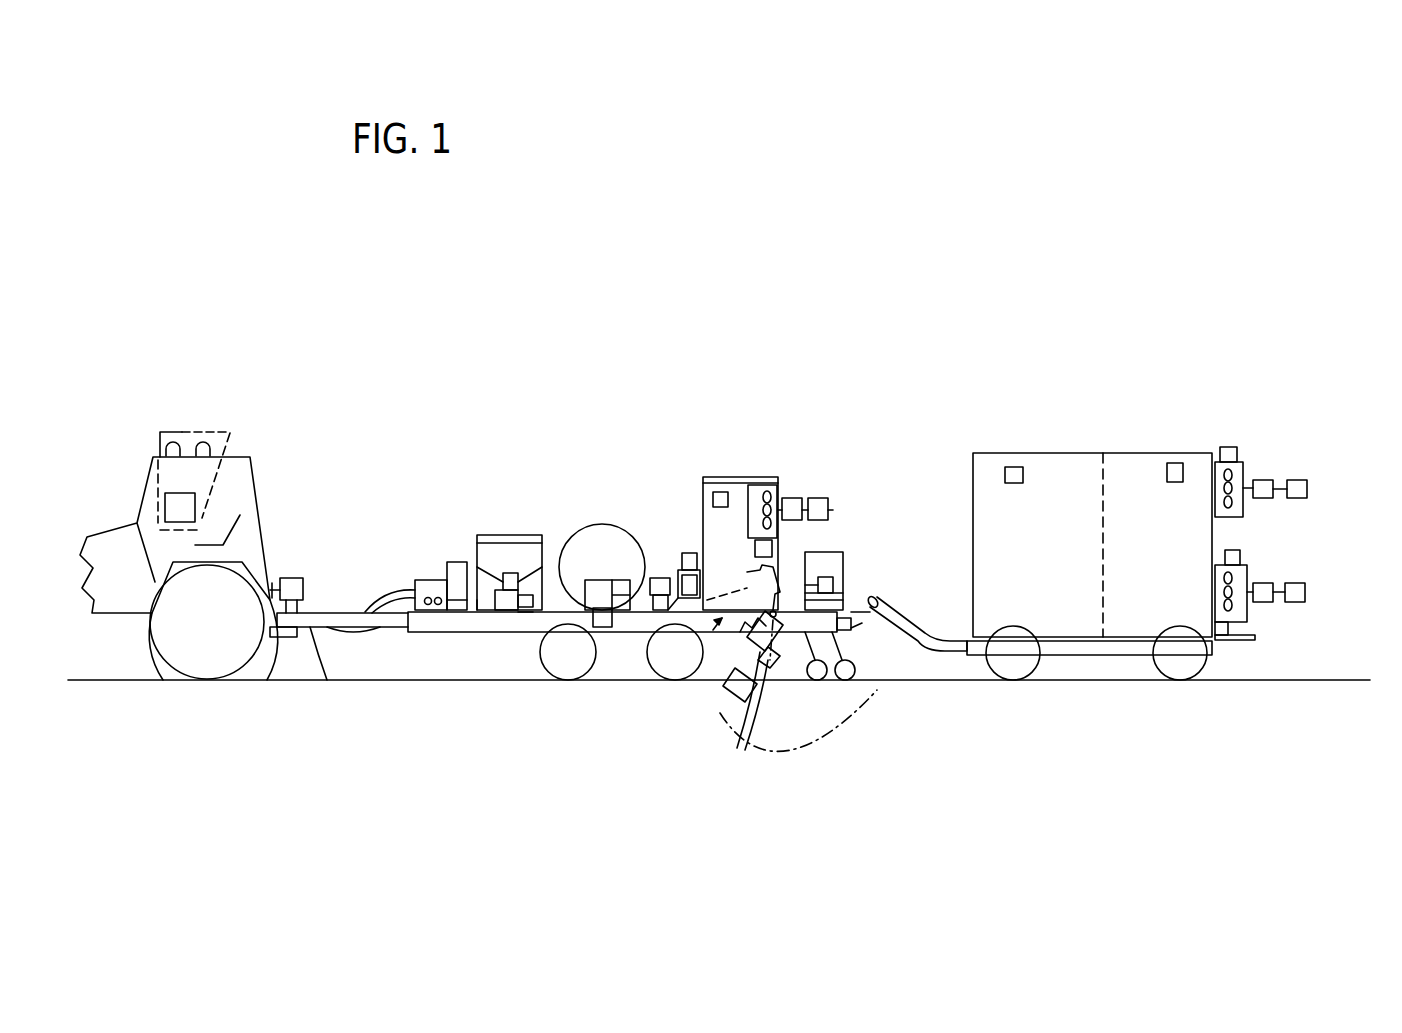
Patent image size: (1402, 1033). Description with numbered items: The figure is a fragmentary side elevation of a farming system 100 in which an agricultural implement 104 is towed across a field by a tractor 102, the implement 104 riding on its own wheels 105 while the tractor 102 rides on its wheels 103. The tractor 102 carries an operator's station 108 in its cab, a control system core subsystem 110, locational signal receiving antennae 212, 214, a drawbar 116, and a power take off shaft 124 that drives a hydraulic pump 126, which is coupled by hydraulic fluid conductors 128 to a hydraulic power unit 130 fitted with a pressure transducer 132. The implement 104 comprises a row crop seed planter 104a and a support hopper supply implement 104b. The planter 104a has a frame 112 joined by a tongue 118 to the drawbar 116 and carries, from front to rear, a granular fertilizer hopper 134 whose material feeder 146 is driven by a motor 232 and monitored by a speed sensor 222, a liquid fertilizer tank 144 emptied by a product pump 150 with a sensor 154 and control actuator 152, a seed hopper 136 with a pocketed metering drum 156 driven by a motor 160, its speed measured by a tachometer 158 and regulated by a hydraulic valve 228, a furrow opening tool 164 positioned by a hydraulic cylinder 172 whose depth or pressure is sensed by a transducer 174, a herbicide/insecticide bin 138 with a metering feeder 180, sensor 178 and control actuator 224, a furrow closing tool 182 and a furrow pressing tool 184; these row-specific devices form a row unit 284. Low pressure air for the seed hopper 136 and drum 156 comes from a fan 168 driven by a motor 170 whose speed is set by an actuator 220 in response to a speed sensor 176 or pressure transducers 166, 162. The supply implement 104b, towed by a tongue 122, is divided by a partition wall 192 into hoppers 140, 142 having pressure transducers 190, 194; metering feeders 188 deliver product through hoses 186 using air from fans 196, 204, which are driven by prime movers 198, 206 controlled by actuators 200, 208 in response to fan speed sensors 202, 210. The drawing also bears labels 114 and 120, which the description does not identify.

The farming system 100 is at (1192, 183).
The tractor 102 is at (102, 687).
The tractor wheels 103 is at (163, 680).
The agricultural implement 104 is at (833, 290).
The row crop seed planter 104a is at (693, 337).
The support hopper supply implement 104b is at (1067, 343).
The implement wheels 105 is at (548, 672).
The operator's station 108 is at (232, 496).
The control system core subsystem 110 is at (160, 440).
The frame 112 is at (430, 632).
The tractor 114 is at (188, 377).
The drawbar 116 is at (267, 680).
The tongue 118 is at (327, 680).
The rear bracket 120 is at (867, 640).
The tongue 122 is at (900, 640).
The power take off shaft 124 is at (277, 578).
The hydraulic pump 126 is at (300, 578).
The hydraulic fluid conductors 128 is at (370, 606).
The hydraulic power unit 130 is at (430, 580).
The pressure transducer 132 is at (458, 562).
The granular fertilizer hopper 134 is at (500, 535).
The seed hopper 136 is at (703, 560).
The herbicide/insecticide bin 138 is at (843, 572).
The hopper 140 is at (1043, 453).
The hopper 142 is at (1140, 453).
The liquid fertilizer tank 144 is at (603, 524).
The granular material feeder 146 is at (477, 610).
The product pump 150 is at (610, 580).
The control actuator 152 is at (600, 628).
The sensor 154 is at (650, 580).
The pocketed drum 156 is at (680, 570).
The tachometer 158 is at (689, 553).
The motor 160 is at (655, 610).
The pressure transducer 162 is at (745, 628).
The furrow opening tool 164 is at (758, 628).
The pressure transducer 166 is at (733, 477).
The fan 168 is at (790, 498).
The motor 170 is at (818, 498).
The hydraulic cylinder 172 is at (762, 652).
The transducer 174 is at (745, 702).
The speed sensor 176 is at (757, 550).
The sensor 178 is at (843, 552).
The metering feeder 180 is at (845, 598).
The furrow closing tool 182 is at (815, 681).
The furrow pressing tool 184 is at (836, 682).
The hoses 186 is at (917, 645).
The metering feeders 188 is at (1097, 657).
The pressure transducer 190 is at (1013, 467).
The partition wall 192 is at (1103, 537).
The pressure transducer 194 is at (1177, 463).
The fan 196 is at (1243, 477).
The prime mover 198 is at (1263, 480).
The actuator 200 is at (1300, 480).
The fan speed sensor 202 is at (1228, 447).
The fan 204 is at (1233, 640).
The prime mover 206 is at (1263, 603).
The actuator 208 is at (1305, 592).
The fan speed sensor 210 is at (1233, 550).
The locational signal receiving antenna 212 is at (176, 441).
The locational signal receiving antenna 214 is at (207, 441).
The actuator 220 is at (833, 508).
The speed sensor 222 is at (525, 612).
The control actuator 224 is at (805, 597).
The hydraulic valve 228 is at (668, 610).
The motor 232 is at (511, 573).
The row unit 284 is at (780, 763).